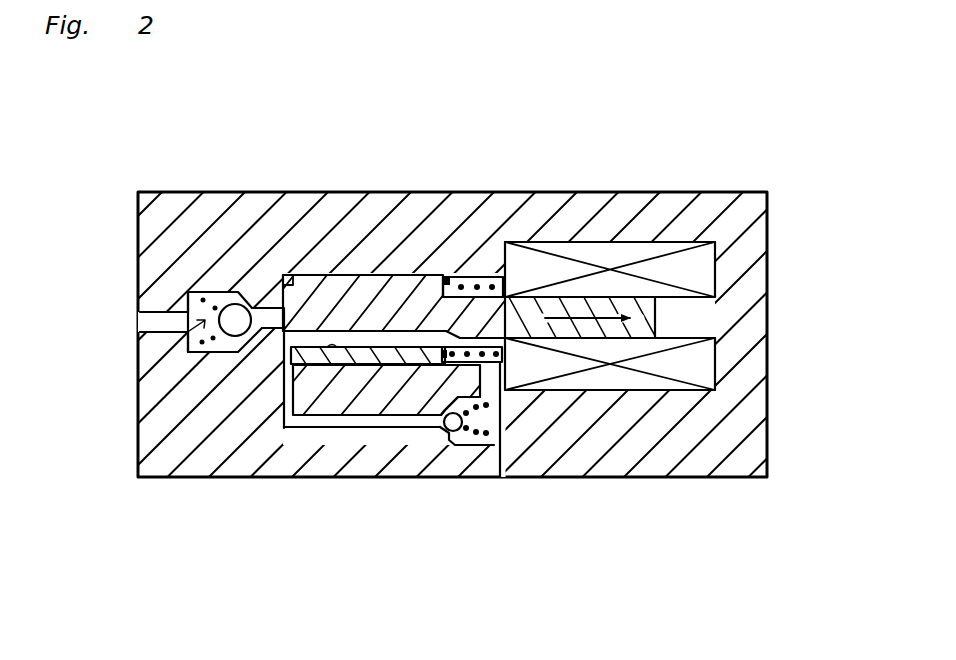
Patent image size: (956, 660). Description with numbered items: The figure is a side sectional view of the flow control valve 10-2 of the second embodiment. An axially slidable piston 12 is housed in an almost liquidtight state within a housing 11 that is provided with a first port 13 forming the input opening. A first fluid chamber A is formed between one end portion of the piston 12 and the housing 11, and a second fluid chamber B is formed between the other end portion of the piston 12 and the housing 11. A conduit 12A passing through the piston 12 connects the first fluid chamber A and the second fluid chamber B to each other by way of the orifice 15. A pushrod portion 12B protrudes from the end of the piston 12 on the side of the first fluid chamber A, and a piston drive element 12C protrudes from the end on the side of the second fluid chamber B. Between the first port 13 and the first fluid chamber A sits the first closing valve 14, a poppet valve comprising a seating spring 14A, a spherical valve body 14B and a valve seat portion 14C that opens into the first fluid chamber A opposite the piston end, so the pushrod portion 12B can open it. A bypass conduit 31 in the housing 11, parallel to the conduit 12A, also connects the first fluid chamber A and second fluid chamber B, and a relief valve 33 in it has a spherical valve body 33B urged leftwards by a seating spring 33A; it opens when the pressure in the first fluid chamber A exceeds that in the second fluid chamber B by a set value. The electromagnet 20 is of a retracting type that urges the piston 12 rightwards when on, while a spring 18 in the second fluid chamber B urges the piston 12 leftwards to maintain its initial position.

The flow control valve 10-2 is at (690, 181).
The housing 11 is at (158, 212).
The piston 12 is at (338, 300).
The conduit 12A is at (397, 345).
The pushrod portion 12B is at (302, 298).
The piston drive element 12C is at (598, 297).
The first port 13 is at (150, 313).
The first closing valve 14 is at (198, 352).
The seating spring 14A is at (198, 353).
The spherical valve body 14B is at (233, 338).
The valve seat portion 14C is at (262, 305).
The orifice 15 is at (340, 353).
The spring 18 is at (450, 278).
The electromagnet 20 is at (690, 252).
The bypass conduit 31 is at (303, 422).
The relief valve 33 is at (492, 446).
The seating spring 33A is at (483, 446).
The spherical valve body 33B is at (447, 450).
The first fluid chamber A is at (273, 304).
The second fluid chamber B is at (470, 278).